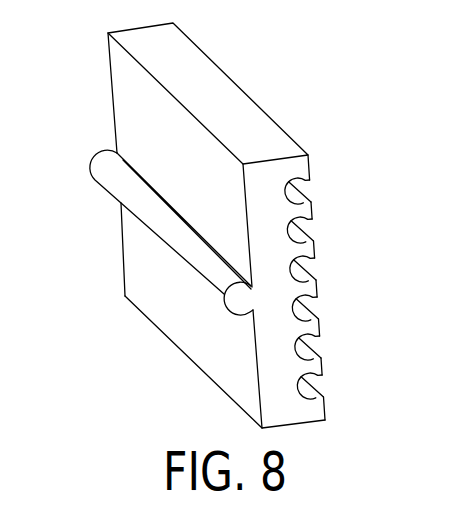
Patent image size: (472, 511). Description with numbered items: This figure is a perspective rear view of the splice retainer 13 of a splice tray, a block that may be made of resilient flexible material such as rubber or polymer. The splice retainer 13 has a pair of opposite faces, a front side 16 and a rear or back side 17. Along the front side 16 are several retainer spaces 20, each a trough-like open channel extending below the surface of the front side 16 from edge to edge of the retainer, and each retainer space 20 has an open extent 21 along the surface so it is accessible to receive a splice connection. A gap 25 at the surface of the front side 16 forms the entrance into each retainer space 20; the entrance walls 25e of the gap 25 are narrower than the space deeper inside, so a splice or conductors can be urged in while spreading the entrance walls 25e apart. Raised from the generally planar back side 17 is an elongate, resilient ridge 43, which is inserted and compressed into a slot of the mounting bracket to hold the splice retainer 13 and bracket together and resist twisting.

The splice retainer 13 is at (238, 105).
The rear or back side 17 is at (124, 105).
The front side 16 is at (308, 170).
The ridge 43 is at (96, 181).
The retainer space 20 is at (308, 227).
The open extent 21 is at (313, 268).
The gap 25 is at (319, 337).
The entrance walls 25e is at (323, 376).